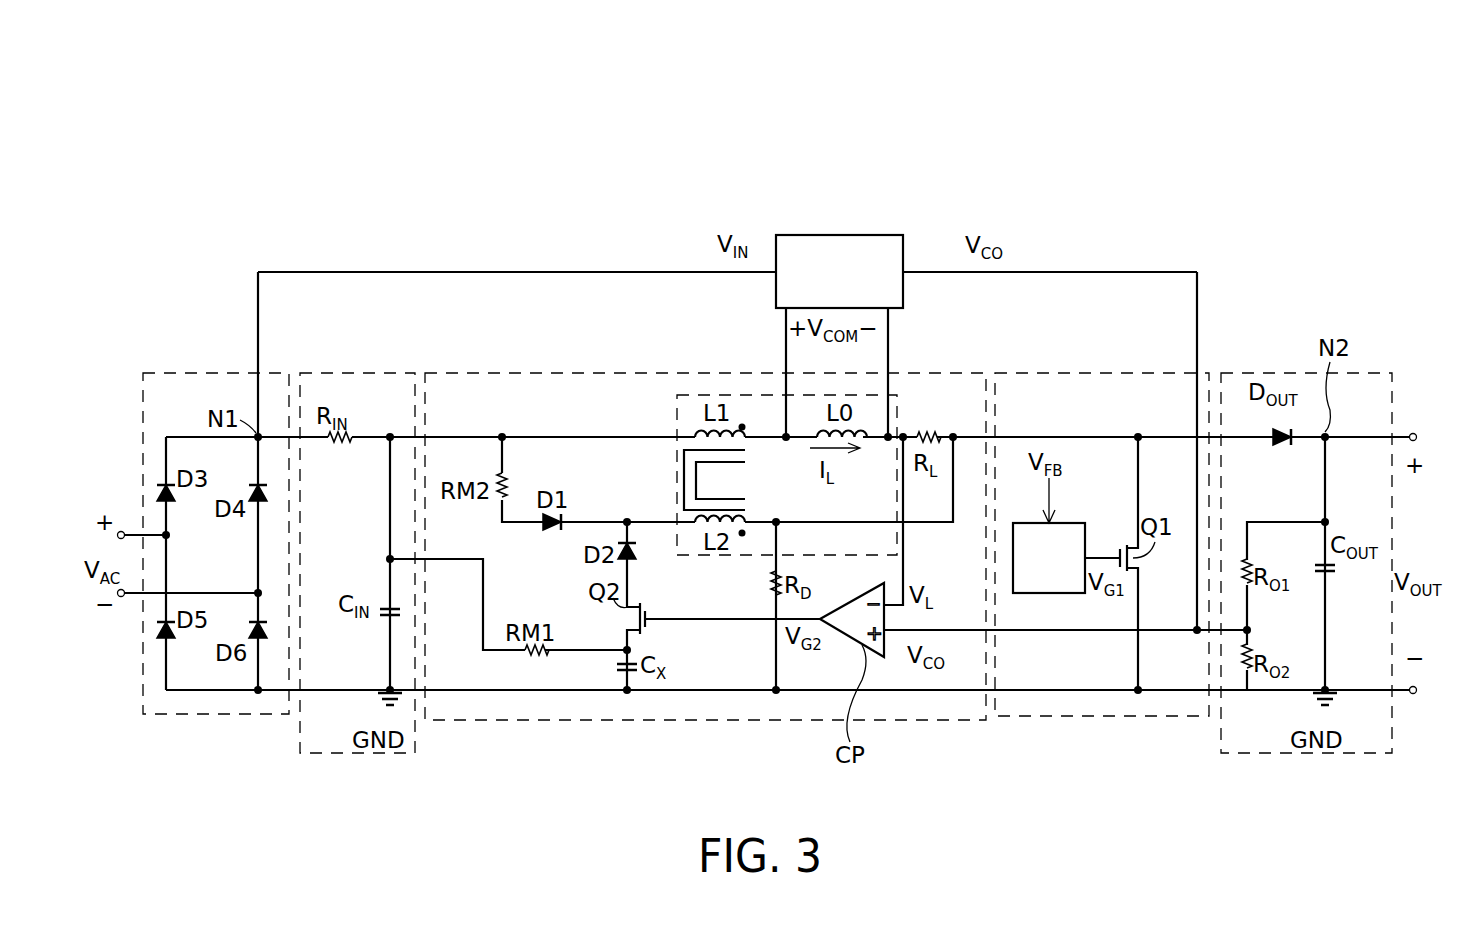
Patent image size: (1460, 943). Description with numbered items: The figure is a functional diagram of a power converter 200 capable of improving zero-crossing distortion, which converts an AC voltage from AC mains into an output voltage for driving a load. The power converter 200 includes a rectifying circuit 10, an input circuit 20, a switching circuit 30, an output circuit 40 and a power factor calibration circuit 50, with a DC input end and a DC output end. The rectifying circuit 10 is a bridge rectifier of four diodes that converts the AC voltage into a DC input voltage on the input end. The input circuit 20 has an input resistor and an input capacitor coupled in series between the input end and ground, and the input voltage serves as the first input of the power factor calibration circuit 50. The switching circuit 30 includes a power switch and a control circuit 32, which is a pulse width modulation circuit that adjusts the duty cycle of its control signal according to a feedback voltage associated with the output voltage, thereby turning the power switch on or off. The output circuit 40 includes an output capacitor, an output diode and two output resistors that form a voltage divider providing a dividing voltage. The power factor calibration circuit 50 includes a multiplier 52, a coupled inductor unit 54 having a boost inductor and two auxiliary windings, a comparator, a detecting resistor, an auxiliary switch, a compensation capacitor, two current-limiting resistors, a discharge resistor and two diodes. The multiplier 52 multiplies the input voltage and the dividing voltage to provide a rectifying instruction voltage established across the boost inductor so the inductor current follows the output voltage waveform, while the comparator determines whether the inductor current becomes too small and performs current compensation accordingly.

The power converter 200 is at (1215, 138).
The rectifying circuit 10 is at (178, 372).
The input circuit 20 is at (343, 756).
The switching circuit 30 is at (1040, 718).
The control circuit 32 is at (1049, 558).
The output circuit 40 is at (1252, 755).
The power factor calibration circuit 50 is at (500, 722).
The multiplier 52 is at (882, 237).
The coupled inductor unit 54 is at (677, 415).